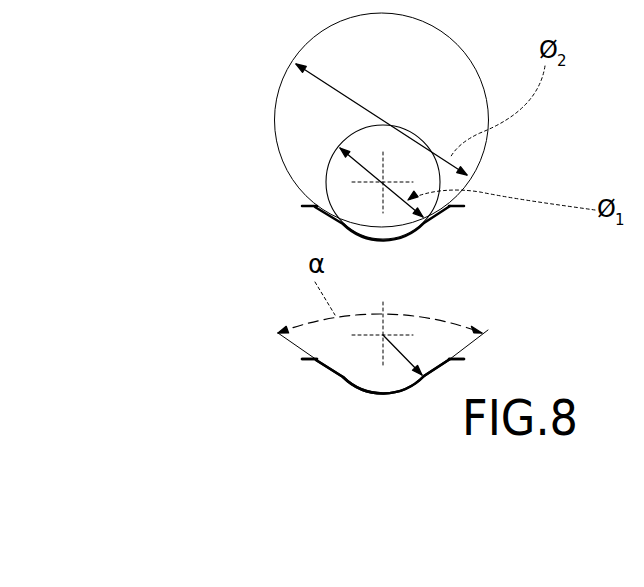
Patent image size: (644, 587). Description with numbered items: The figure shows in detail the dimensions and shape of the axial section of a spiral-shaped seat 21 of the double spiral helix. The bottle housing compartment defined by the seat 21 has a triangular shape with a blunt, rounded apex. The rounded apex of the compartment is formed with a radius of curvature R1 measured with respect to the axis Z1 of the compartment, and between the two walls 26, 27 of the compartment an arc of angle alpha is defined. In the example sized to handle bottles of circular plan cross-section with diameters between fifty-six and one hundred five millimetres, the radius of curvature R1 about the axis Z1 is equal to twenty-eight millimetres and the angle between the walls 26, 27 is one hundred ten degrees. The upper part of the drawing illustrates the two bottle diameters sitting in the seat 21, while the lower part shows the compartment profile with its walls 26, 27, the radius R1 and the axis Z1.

The spiral-shaped seat 21 is at (328, 232).
The wall of the compartment 26 is at (323, 362).
The wall of the compartment 27 is at (440, 366).
The radius of curvature R1 is at (405, 360).
The axis of the compartment Z1 is at (405, 312).